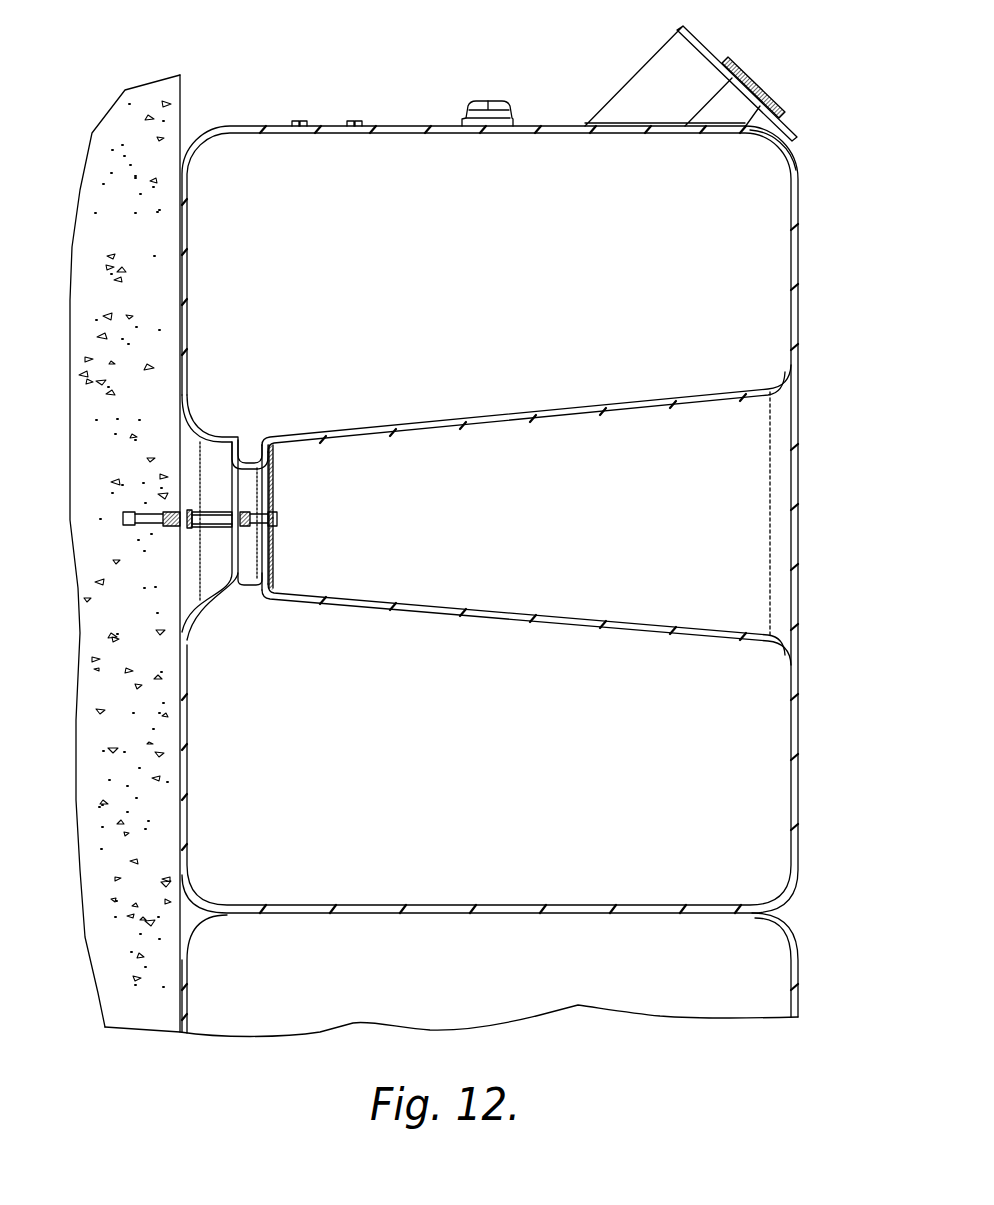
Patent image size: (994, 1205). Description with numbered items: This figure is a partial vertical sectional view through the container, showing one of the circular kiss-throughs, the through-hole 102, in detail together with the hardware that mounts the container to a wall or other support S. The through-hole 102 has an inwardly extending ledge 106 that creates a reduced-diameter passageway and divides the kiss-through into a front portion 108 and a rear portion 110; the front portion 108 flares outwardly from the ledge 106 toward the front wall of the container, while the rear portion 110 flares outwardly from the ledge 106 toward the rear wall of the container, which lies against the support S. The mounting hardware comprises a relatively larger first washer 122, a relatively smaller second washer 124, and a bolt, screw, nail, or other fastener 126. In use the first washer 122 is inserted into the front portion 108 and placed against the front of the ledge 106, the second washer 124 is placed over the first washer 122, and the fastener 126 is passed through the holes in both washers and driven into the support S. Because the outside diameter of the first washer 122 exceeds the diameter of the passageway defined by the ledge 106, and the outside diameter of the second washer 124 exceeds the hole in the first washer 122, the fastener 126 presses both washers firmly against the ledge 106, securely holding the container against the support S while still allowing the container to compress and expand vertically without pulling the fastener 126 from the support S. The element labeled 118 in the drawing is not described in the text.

The wall or other support S is at (170, 117).
The through-hole (kiss-through) 102 is at (803, 562).
The ledge 106 is at (247, 450).
The front portion 108 is at (660, 517).
The rear portion 110 is at (218, 575).
The funnel sheet 118 is at (497, 415).
The first washer 122 is at (268, 470).
The second washer 124 is at (268, 538).
The fastener 126 is at (147, 511).